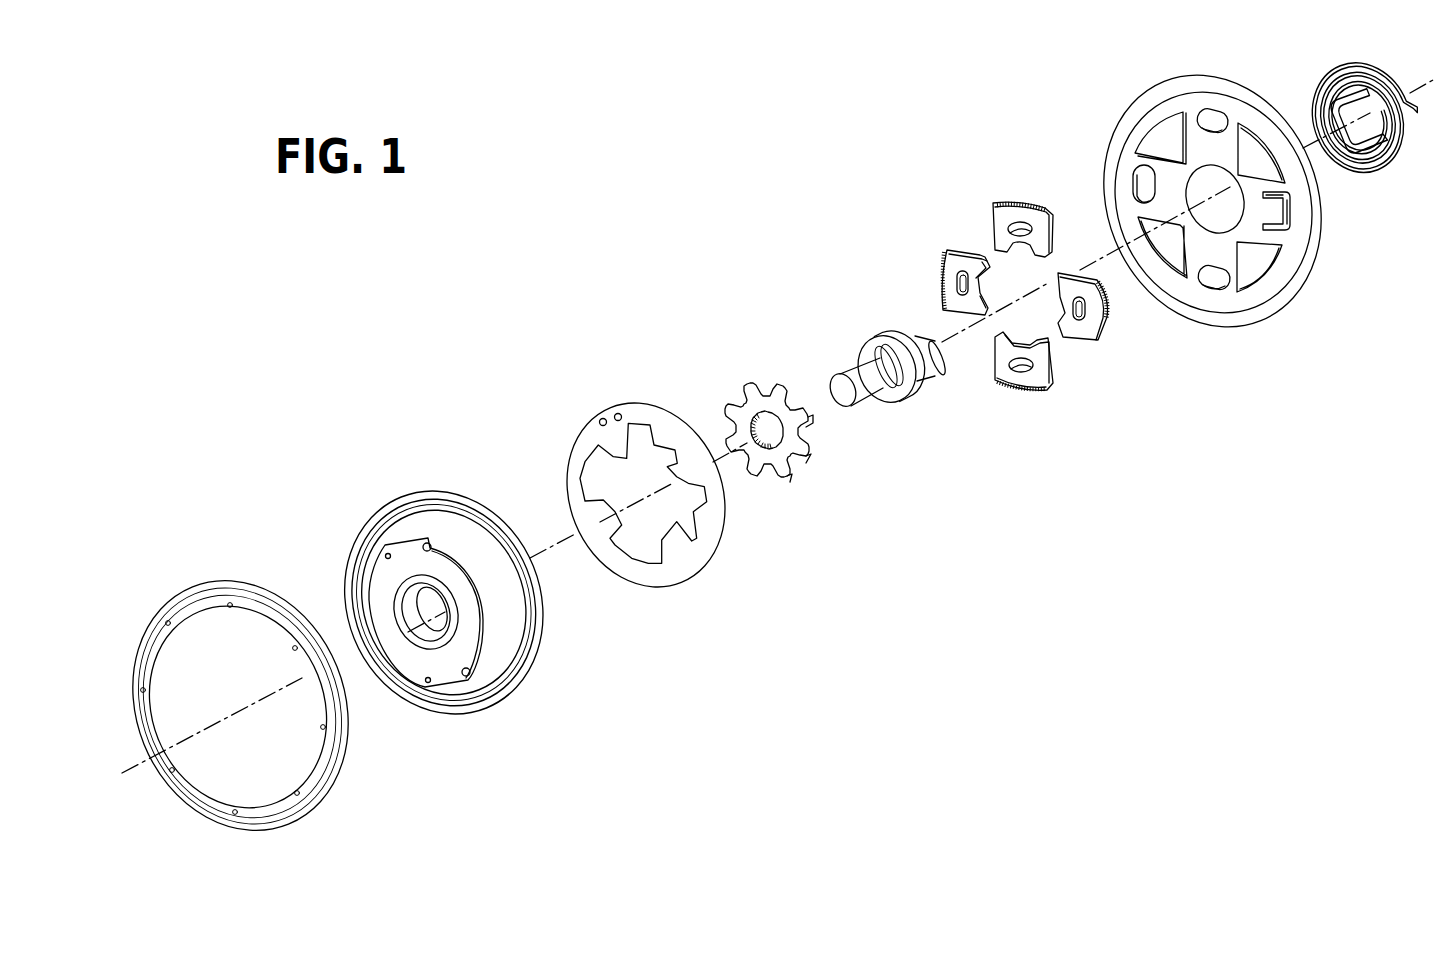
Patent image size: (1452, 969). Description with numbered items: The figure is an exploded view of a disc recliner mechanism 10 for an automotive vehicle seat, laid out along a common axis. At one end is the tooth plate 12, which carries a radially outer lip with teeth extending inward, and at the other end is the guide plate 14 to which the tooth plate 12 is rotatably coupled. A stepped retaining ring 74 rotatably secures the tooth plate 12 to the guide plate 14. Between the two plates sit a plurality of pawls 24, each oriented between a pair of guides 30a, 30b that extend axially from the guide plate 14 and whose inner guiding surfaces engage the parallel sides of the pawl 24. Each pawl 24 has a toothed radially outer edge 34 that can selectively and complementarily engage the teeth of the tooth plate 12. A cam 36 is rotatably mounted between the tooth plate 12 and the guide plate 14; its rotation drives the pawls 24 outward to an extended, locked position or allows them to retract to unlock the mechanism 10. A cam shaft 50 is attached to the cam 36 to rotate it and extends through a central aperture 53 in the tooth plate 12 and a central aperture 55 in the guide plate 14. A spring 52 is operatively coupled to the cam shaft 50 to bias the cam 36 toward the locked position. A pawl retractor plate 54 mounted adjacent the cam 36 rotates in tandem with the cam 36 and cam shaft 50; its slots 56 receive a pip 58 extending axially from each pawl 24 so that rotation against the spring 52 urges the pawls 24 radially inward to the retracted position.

The disc recliner mechanism 10 is at (930, 600).
The tooth plate 12 is at (457, 610).
The guide plate 14 is at (1228, 196).
The pawl 24 is at (1099, 342).
The guide 30a is at (1160, 122).
The guide 30b is at (1258, 142).
The toothed radially outer edge 34 is at (1012, 202).
The cam 36 is at (790, 470).
The cam shaft 50 is at (900, 405).
The spring 52 is at (1383, 173).
The central aperture 53 is at (447, 625).
The pawl retractor plate 54 is at (657, 479).
The central aperture 55 is at (1243, 215).
The slot 56 is at (643, 447).
The pip 58 is at (957, 283).
The stepped retaining ring 74 is at (303, 815).